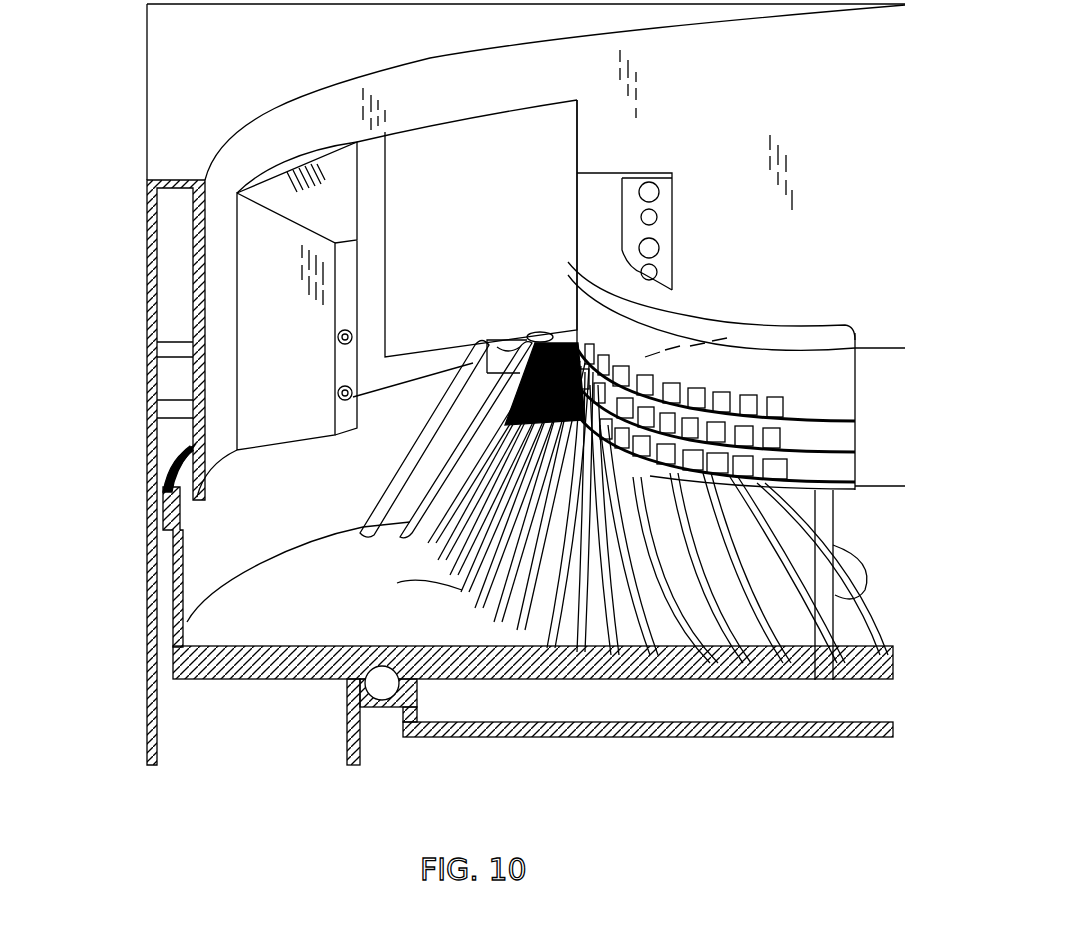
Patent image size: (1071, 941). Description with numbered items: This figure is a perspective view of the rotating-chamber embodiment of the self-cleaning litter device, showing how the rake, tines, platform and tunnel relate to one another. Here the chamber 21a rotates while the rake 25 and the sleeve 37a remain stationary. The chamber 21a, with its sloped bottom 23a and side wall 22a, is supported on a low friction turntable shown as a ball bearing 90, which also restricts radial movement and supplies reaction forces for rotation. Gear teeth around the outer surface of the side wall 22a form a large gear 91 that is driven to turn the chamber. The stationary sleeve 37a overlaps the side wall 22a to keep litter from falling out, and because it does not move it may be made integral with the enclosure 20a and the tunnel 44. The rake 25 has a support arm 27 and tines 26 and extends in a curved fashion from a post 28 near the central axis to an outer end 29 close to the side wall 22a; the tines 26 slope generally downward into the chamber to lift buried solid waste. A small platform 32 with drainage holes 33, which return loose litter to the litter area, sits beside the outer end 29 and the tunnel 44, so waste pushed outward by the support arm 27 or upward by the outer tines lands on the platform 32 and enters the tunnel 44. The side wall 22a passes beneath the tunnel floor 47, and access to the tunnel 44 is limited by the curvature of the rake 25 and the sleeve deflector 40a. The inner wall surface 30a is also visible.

The enclosure 20a is at (175, 115).
The chamber 21a is at (180, 656).
The side wall 22a is at (190, 575).
The sloped bottom 23a is at (310, 610).
The rake 25 is at (825, 380).
The tines 26 is at (435, 568).
The support arm 27 is at (765, 323).
The post 28 is at (823, 562).
The outer end 29 is at (597, 183).
The inner wall surface 30a is at (468, 226).
The platform 32 is at (515, 335).
The drainage holes 33 is at (565, 335).
The sleeve 37a is at (196, 300).
The sleeve deflector 40a is at (295, 347).
The tunnel 44 is at (515, 167).
The tunnel floor 47 is at (423, 343).
The ball bearing 90 is at (347, 690).
The large gear 91 is at (143, 455).